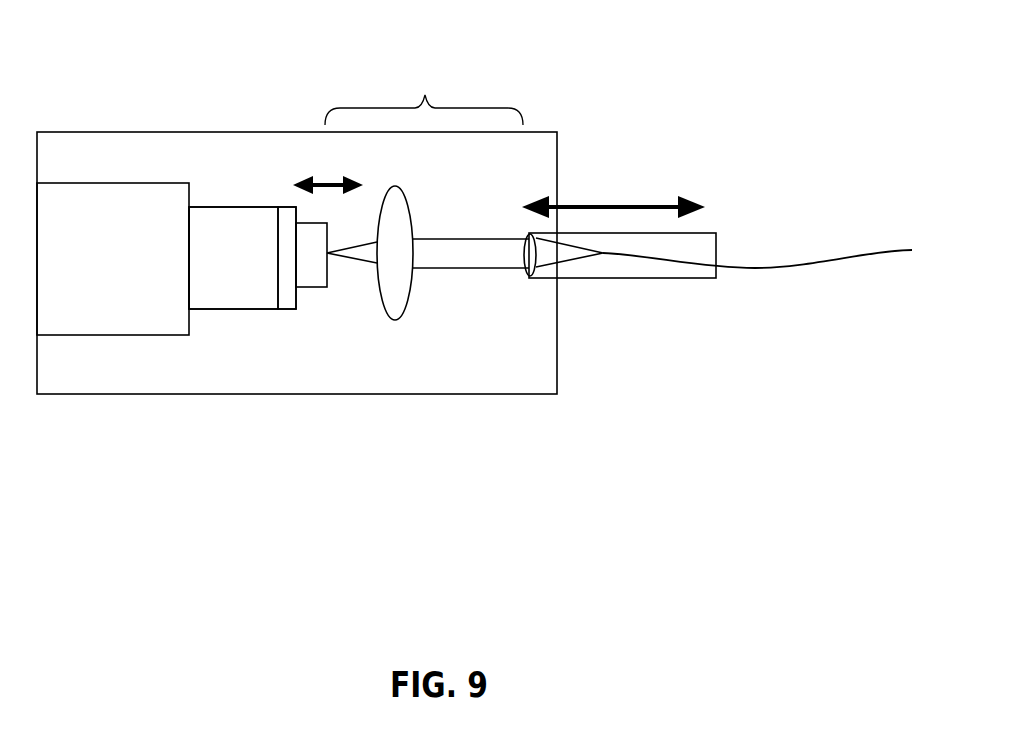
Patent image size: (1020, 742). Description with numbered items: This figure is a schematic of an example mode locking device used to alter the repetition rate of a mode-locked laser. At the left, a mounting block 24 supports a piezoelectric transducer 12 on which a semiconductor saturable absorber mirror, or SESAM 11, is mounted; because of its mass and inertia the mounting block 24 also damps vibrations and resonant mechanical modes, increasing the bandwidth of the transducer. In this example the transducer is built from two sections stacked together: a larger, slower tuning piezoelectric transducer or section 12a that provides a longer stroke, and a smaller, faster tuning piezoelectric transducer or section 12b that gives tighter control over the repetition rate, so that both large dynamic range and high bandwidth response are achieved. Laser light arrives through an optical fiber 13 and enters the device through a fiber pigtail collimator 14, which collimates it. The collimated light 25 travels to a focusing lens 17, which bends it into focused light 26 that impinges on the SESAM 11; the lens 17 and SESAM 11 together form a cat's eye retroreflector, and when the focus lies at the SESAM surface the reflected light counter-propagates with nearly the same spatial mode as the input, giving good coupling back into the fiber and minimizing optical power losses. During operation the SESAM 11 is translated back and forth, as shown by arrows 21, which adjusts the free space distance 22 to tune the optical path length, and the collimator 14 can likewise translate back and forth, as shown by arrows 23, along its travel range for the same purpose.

The semiconductor saturable absorber mirror (SESAM) 11 is at (308, 276).
The piezoelectric transducer 12 is at (236, 280).
The larger, slower tuning piezoelectric transducer or section 12a is at (229, 207).
The smaller, faster tuning piezoelectric transducer or section 12b is at (285, 207).
The optical fiber 13 is at (821, 263).
The fiber pigtail collimator 14 is at (630, 272).
The focusing lens 17 is at (398, 297).
The arrows 21 is at (325, 176).
The free space distance 22 is at (424, 92).
The arrows 23 is at (615, 195).
The mounting block 24 is at (116, 278).
The collimated light 25 is at (483, 257).
The focused light 26 is at (359, 257).